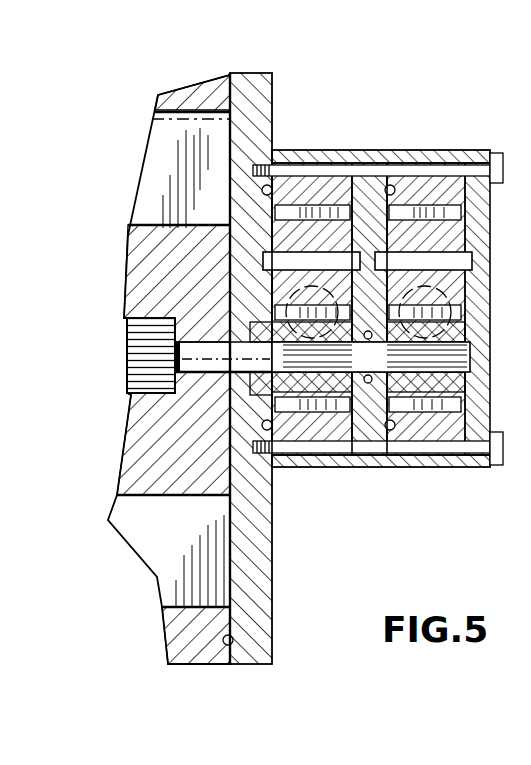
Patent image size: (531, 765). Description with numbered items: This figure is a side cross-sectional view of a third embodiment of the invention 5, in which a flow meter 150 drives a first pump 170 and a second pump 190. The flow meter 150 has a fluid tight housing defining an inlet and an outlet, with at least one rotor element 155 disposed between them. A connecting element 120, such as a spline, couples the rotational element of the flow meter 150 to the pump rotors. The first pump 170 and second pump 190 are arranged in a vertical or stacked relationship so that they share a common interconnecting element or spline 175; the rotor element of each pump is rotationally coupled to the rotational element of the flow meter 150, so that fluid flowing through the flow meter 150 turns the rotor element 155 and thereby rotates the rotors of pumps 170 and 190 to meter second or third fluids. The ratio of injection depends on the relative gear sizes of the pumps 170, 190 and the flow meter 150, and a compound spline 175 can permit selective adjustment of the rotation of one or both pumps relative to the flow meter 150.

The fluid transfer apparatus 5 is at (188, 92).
The rotor element 155 is at (155, 175).
The flow meter 150 is at (258, 672).
The connecting element 120 is at (213, 360).
The first pump 170 is at (338, 146).
The second pump 190 is at (440, 146).
The spline 175 is at (323, 355).